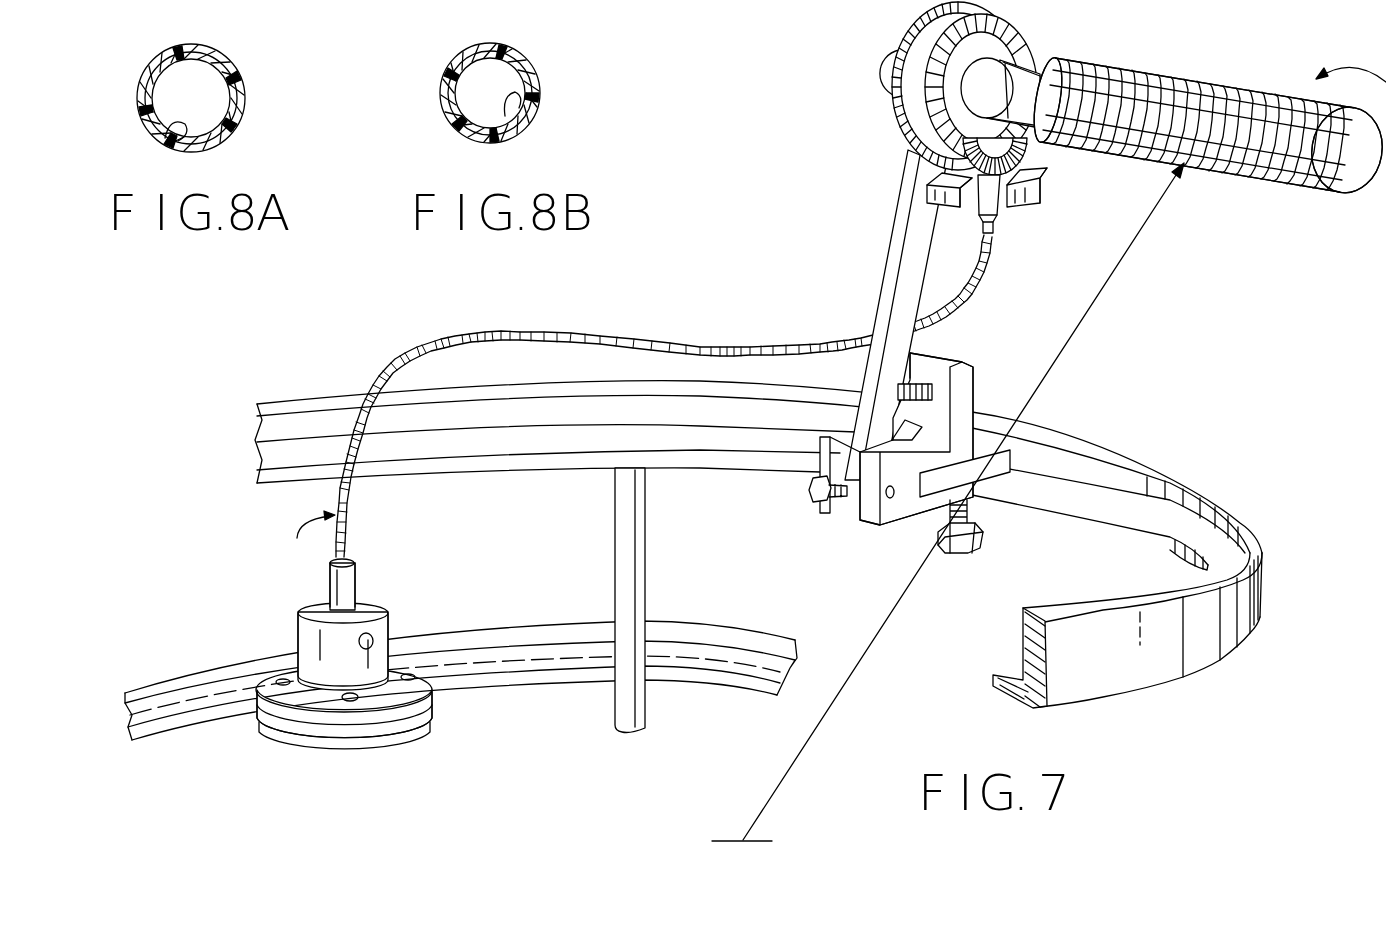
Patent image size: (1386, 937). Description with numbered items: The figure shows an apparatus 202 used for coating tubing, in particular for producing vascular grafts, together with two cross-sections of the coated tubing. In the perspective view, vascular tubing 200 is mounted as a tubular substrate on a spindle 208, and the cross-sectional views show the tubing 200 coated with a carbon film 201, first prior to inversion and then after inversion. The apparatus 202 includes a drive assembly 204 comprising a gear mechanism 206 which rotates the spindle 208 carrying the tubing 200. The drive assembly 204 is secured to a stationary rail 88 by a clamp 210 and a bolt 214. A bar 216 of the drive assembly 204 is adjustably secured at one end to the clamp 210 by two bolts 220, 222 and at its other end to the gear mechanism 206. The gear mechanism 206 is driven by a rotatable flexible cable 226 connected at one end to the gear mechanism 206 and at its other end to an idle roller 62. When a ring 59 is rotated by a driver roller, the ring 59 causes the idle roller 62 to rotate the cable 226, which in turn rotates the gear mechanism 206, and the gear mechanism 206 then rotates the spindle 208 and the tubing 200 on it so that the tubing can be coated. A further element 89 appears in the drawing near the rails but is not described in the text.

In FIG. 7, the ring 59 is at (515, 635).
In FIG. 7, the idle roller 62 is at (432, 727).
In FIG. 7, the stationary rail 88 is at (320, 404).
In FIG. 7, the rod 89 is at (636, 567).
In FIG. 8A, the vascular tubing 200 is at (168, 140).
In FIG. 8B, the vascular tubing 200 is at (538, 90).
In FIG. 7, the vascular tubing 200 is at (1143, 80).
In FIG. 8A, the carbon film 201 is at (233, 70).
In FIG. 8B, the carbon film 201 is at (520, 118).
In FIG. 7, the apparatus 202 is at (894, 137).
In FIG. 7, the drive assembly 204 is at (912, 22).
In FIG. 7, the gear mechanism 206 is at (890, 50).
In FIG. 7, the spindle 208 is at (1013, 80).
In FIG. 7, the clamp 210 is at (905, 505).
In FIG. 7, the bolt 214 is at (978, 541).
In FIG. 7, the bar 216 is at (908, 207).
In FIG. 7, the bolt 220 is at (810, 490).
In FIG. 7, the bolt 222 is at (982, 372).
In FIG. 7, the rotatable flexible cable 226 is at (597, 343).